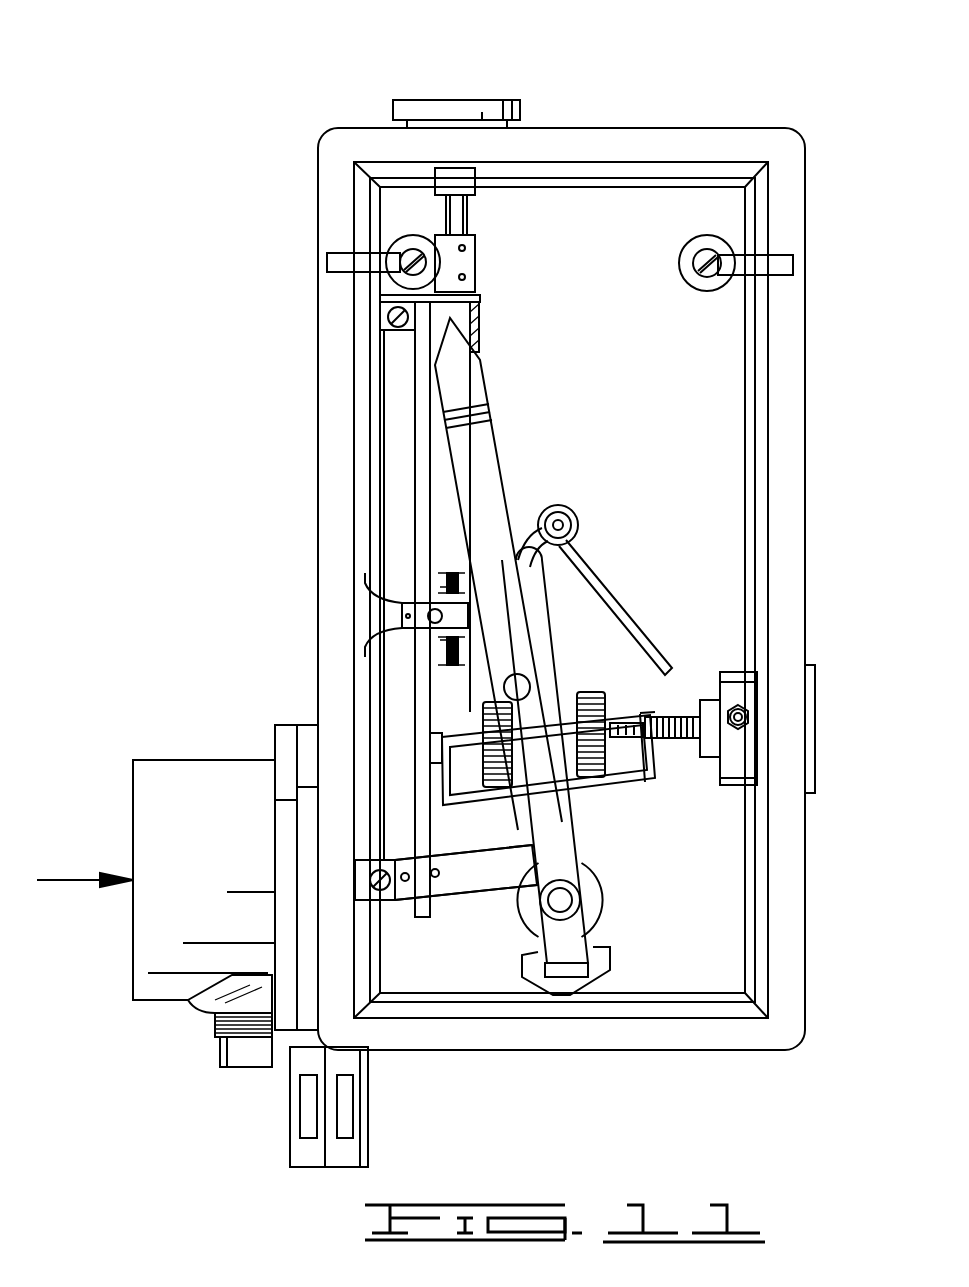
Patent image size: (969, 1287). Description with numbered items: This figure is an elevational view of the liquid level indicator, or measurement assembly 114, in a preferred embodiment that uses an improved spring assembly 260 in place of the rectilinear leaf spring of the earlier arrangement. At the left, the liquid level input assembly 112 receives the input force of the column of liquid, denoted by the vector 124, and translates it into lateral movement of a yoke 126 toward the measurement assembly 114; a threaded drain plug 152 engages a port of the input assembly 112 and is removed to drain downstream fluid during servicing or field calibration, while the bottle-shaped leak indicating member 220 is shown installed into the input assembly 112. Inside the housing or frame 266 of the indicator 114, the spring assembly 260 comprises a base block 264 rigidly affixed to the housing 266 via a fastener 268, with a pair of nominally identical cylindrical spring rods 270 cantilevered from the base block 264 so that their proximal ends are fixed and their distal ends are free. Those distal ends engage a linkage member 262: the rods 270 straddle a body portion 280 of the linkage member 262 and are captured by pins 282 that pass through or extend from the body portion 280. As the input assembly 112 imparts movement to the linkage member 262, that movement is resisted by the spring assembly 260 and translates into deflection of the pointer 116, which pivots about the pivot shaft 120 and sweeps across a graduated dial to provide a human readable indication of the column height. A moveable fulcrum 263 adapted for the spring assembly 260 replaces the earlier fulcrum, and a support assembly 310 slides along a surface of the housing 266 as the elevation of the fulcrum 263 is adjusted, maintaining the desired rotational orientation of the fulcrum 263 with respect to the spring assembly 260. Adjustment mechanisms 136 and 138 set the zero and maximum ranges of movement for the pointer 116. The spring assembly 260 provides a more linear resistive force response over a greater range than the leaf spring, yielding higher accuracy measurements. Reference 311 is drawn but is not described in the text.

The measurement assembly 114 is at (678, 140).
The housing 266 is at (330, 218).
The adjustment mechanism 136 is at (458, 97).
The base block 264 is at (415, 296).
The fastener 268 is at (392, 322).
The guide block 311 is at (478, 322).
The spring rods 270 is at (420, 686).
The spring assembly 260 is at (421, 467).
The pointer 116 is at (467, 385).
The linkage member 262 is at (490, 888).
The body portion 280 is at (467, 870).
The pins 282 is at (437, 869).
The yoke 126 is at (368, 857).
The pivot shaft 120 is at (563, 900).
The moveable fulcrum 263 is at (410, 583).
The support assembly 310 is at (395, 612).
The adjustment mechanism 138 is at (815, 740).
The liquid level input assembly 112 is at (212, 788).
The input force vector 124 is at (68, 880).
The drain plug 152 is at (238, 1058).
The leak indicating member 220 is at (294, 1130).